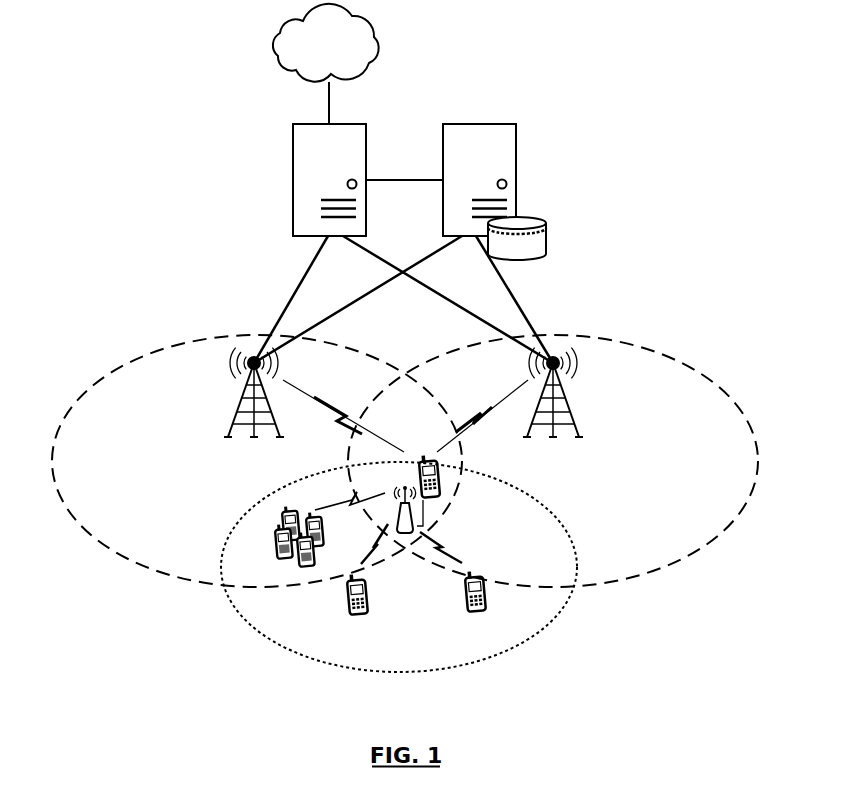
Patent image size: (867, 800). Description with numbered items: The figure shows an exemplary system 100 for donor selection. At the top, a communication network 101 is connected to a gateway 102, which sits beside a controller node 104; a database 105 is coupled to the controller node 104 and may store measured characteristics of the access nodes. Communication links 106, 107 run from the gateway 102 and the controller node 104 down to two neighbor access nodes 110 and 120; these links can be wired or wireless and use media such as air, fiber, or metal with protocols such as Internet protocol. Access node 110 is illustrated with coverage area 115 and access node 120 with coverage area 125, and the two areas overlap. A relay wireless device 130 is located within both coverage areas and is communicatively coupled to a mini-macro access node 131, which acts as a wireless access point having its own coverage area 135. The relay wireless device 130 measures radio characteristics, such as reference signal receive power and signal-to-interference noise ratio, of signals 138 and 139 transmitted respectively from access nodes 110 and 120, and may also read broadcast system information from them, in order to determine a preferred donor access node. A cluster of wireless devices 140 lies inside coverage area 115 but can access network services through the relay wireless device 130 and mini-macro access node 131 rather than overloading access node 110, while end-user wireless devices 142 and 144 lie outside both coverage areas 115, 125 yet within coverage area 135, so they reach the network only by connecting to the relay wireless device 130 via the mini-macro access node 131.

The system for donor selection 100 is at (526, 43).
The communication network 101 is at (346, 54).
The gateway 102 is at (294, 179).
The controller node 104 is at (516, 180).
The database 105 is at (554, 234).
The communication link 106 is at (403, 299).
The communication link 107 is at (403, 299).
The access node 110 is at (218, 392).
The coverage area 115 is at (257, 461).
The access node 120 is at (591, 392).
The coverage area 125 is at (553, 461).
The relay wireless device 130 is at (465, 490).
The mini-macro access node 131 is at (388, 512).
The coverage area 135 is at (430, 567).
The signal 138 is at (344, 412).
The signal 139 is at (472, 412).
The cluster of wireless devices 140 is at (264, 536).
The end-user wireless device 142 is at (325, 605).
The end-user wireless device 144 is at (444, 603).